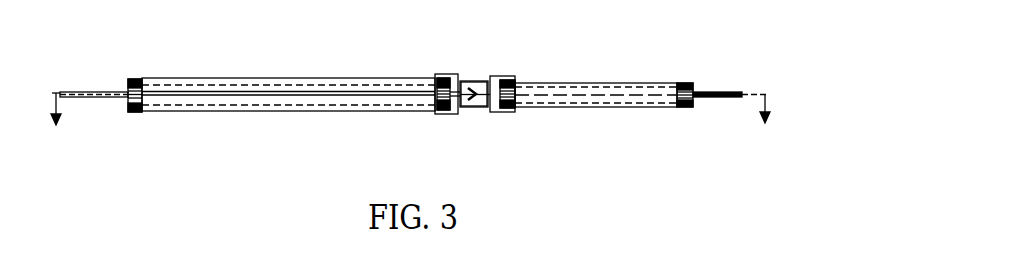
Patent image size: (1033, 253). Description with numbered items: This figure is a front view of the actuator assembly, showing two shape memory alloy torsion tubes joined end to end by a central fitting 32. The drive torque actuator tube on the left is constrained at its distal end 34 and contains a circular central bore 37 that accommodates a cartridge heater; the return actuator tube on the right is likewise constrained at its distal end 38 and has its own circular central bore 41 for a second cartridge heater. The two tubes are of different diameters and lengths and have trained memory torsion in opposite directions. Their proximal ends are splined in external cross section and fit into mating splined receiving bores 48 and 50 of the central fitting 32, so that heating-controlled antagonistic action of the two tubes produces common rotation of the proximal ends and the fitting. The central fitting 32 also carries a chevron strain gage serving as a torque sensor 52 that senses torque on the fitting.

The central fitting 32 is at (475, 80).
The distal end 34 is at (131, 78).
The central bore 37 is at (190, 105).
The distal end 38 is at (692, 83).
The central bore 41 is at (613, 107).
The receiving bore 48 is at (437, 88).
The receiving bore 50 is at (517, 86).
The torque sensor 52 is at (473, 101).